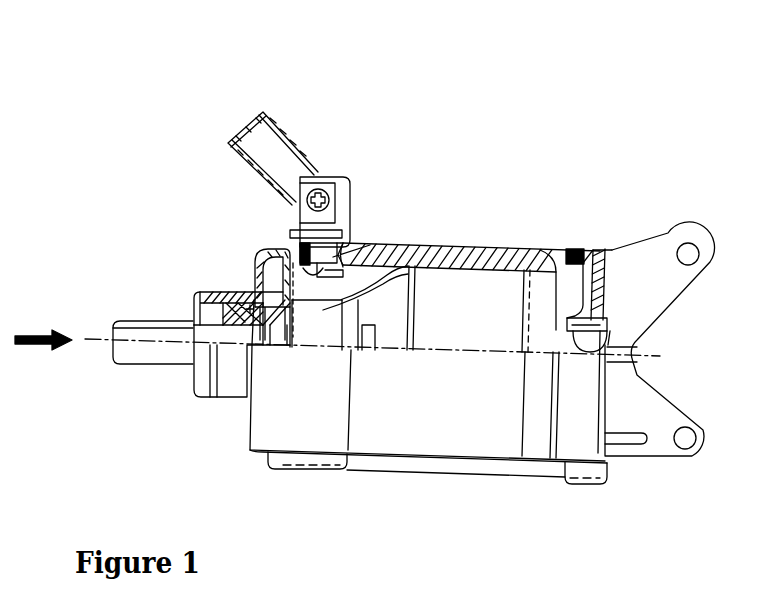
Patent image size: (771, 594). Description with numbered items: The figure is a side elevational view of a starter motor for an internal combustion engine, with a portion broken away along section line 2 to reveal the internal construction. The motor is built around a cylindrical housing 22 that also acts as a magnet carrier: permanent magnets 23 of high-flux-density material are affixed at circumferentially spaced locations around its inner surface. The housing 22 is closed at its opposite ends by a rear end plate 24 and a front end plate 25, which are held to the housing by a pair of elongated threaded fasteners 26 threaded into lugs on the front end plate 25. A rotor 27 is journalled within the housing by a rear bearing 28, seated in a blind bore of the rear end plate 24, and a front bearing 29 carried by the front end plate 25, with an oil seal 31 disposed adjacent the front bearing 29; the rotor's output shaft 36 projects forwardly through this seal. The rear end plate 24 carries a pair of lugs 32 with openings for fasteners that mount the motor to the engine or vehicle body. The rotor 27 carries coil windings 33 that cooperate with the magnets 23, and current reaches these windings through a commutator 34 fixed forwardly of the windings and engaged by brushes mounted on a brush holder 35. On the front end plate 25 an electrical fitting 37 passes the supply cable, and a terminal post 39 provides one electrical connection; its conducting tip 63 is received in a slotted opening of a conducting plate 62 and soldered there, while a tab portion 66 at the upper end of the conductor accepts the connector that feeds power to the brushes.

The section line 2 is at (43, 328).
The cylindrical housing 22 is at (417, 240).
The permanent magnets 23 is at (473, 240).
The rear end plate 24 is at (614, 250).
The front end plate 25 is at (250, 445).
The threaded fasteners 26 is at (437, 474).
The rotor 27 is at (566, 252).
The rear bearing 28 is at (630, 348).
The front bearing 29 is at (232, 297).
The oil seal 31 is at (213, 296).
The lugs 32 is at (700, 236).
The coil windings 33 is at (500, 240).
The commutator 34 is at (393, 240).
The brush holder 35 is at (258, 276).
The output shaft 36 is at (137, 364).
The electrical fitting 37 is at (280, 110).
The terminal post 39 is at (323, 170).
The conducting plate 62 is at (370, 245).
The conducting tip 63 is at (262, 250).
The tab portion 66 is at (308, 130).